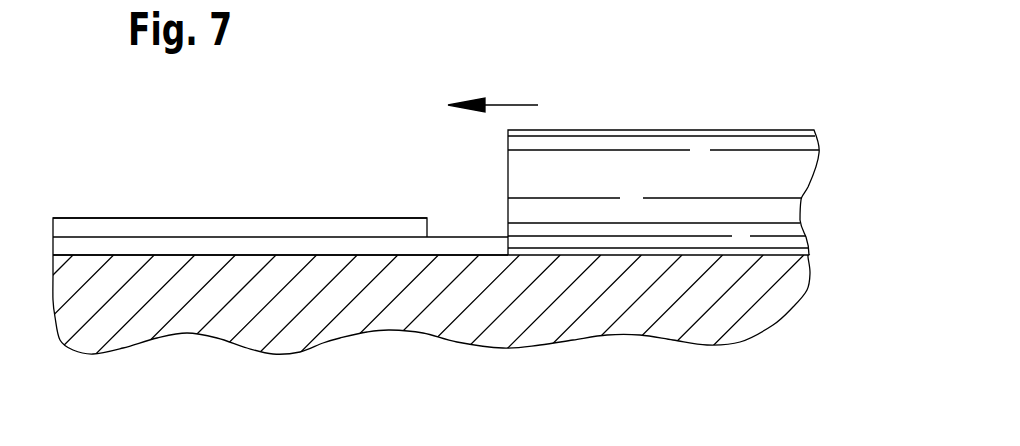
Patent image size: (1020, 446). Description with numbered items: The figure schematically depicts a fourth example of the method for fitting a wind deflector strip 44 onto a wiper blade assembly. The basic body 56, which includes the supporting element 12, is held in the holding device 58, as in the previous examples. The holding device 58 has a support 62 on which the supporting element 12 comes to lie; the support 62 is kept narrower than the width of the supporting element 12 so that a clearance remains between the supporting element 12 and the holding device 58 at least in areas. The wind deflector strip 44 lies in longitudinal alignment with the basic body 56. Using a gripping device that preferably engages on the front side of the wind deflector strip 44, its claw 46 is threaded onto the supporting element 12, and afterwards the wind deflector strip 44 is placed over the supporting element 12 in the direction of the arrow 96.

The supporting element 12 is at (297, 228).
The wind deflector strip 44 is at (617, 145).
The claw 46 is at (569, 242).
The basic body 56 is at (146, 204).
The holding device 58 is at (653, 302).
The support 62 is at (457, 247).
The arrow 96 is at (514, 100).